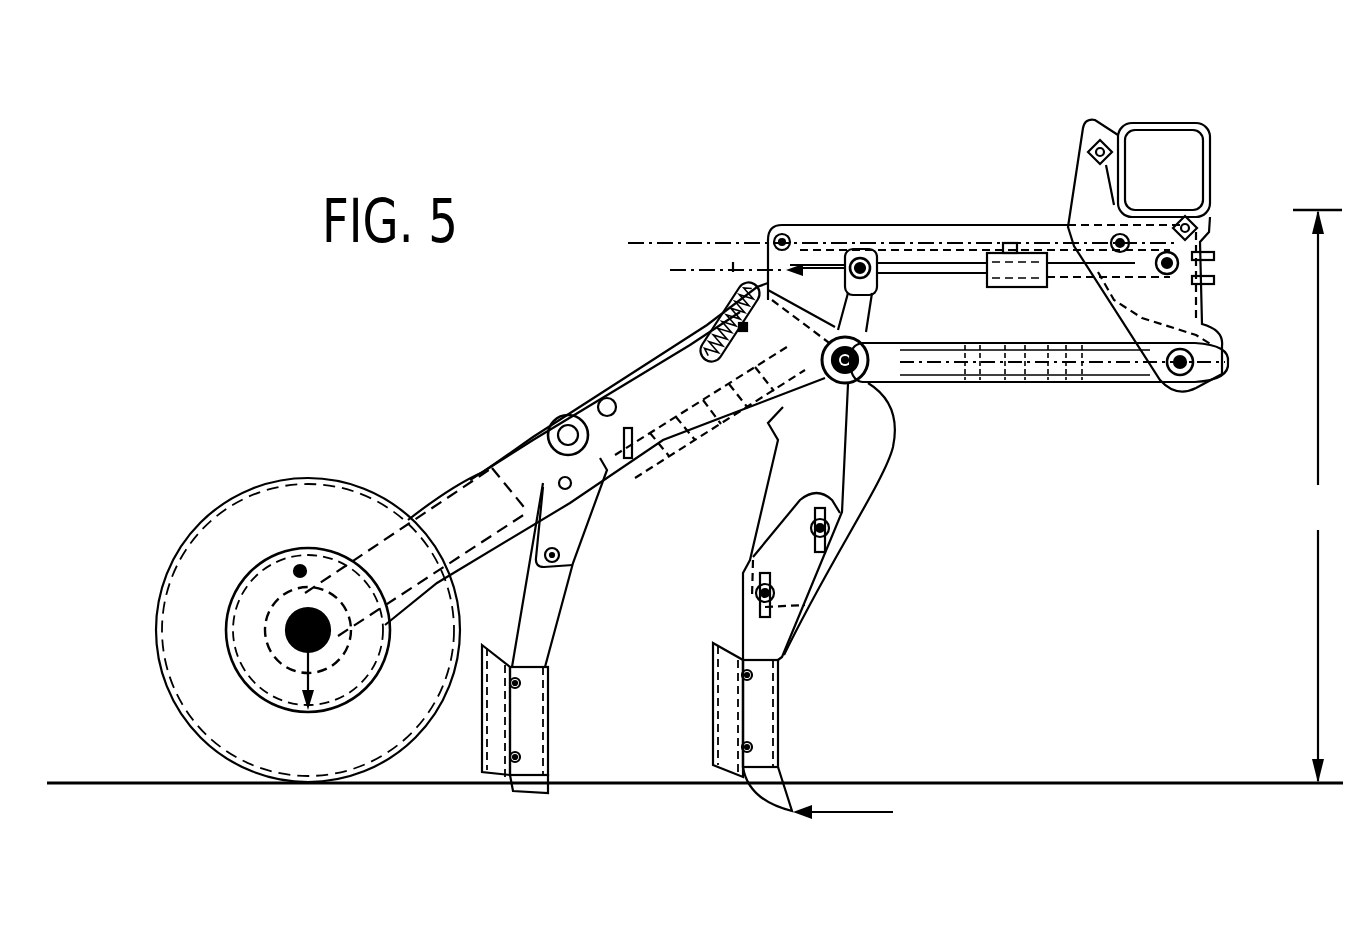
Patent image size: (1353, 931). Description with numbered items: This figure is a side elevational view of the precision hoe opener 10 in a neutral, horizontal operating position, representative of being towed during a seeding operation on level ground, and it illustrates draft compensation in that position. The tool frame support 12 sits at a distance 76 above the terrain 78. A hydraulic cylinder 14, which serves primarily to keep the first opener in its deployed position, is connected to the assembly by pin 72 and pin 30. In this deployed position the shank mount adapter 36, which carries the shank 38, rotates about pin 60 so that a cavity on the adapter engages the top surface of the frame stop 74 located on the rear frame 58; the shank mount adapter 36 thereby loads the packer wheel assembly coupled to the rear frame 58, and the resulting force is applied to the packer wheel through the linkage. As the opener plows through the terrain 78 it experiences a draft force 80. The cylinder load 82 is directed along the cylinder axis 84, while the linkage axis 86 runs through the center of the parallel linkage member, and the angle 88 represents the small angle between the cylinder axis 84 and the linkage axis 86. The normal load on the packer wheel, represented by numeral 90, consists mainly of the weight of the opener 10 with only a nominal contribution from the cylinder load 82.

The precision hoe opener assembly 10 is at (618, 96).
The frame support 12 is at (1085, 192).
The cylinder 14 is at (1065, 280).
The pin 30 is at (862, 262).
The shank mount adapter 36 is at (855, 482).
The shank 38 is at (778, 627).
The rear frame 58 is at (720, 330).
The pin 60 is at (857, 385).
The pin 72 is at (1170, 258).
The frame stop 74 is at (744, 412).
The distance 76 is at (1317, 496).
The terrain 78 is at (1100, 783).
The draft force 80 is at (866, 814).
The cylinder load 82 is at (845, 337).
The cylinder axis 84 is at (690, 270).
The linkage axis 86 is at (685, 242).
The angle 88 is at (733, 270).
The normal load on packer wheel 90 is at (305, 658).